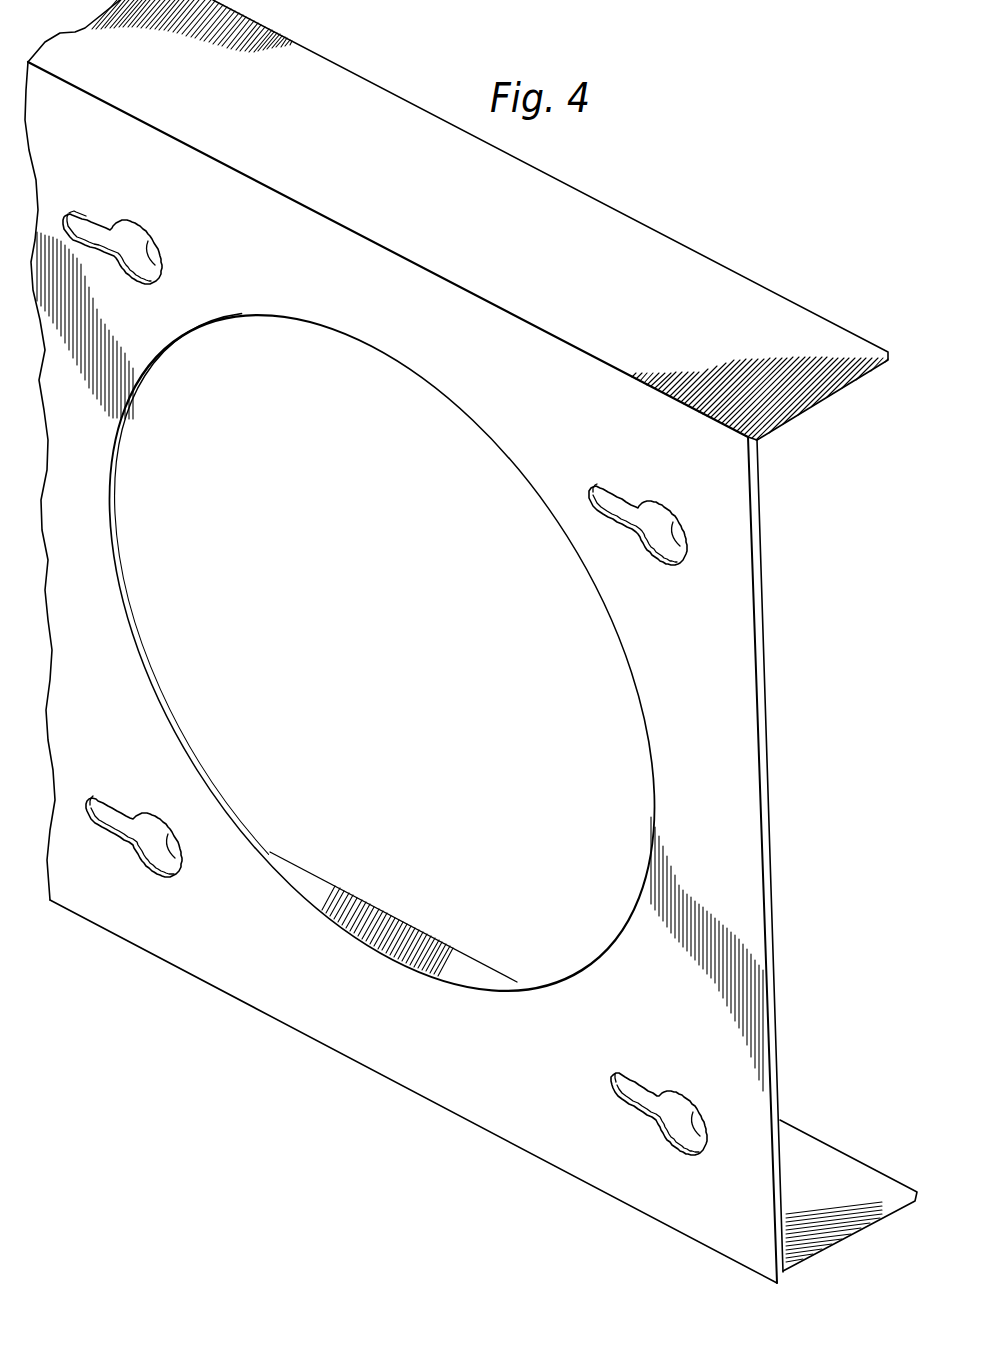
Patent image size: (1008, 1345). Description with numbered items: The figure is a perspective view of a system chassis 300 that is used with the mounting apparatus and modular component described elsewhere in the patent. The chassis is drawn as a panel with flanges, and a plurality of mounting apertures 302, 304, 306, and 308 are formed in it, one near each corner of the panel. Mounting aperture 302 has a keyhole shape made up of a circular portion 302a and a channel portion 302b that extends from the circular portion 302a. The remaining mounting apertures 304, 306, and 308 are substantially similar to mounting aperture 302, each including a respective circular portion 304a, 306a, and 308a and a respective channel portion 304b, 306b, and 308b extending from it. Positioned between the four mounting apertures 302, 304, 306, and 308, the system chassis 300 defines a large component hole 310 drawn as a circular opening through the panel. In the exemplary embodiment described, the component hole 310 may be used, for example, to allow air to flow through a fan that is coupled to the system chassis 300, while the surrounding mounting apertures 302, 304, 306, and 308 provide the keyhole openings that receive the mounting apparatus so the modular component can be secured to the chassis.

The system chassis 300 is at (681, 149).
The mounting aperture 302 is at (157, 250).
The circular portion 302a is at (160, 233).
The channel portion 302b is at (110, 208).
The mounting aperture 304 is at (685, 545).
The circular portion 304a is at (687, 503).
The channel portion 304b is at (634, 478).
The mounting aperture 306 is at (687, 1102).
The circular portion 306a is at (707, 1170).
The channel portion 306b is at (655, 1149).
The mounting aperture 308 is at (182, 848).
The circular portion 308a is at (180, 895).
The channel portion 308b is at (130, 870).
The component hole 310 is at (646, 734).